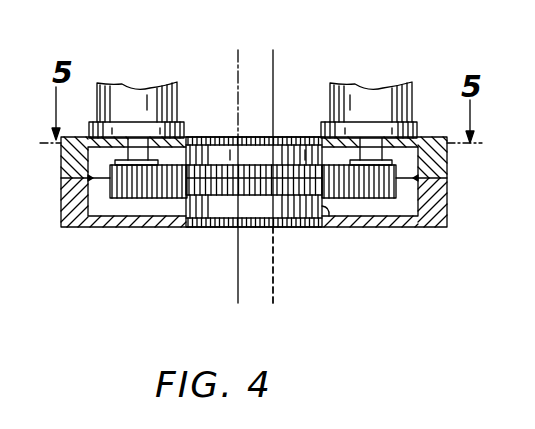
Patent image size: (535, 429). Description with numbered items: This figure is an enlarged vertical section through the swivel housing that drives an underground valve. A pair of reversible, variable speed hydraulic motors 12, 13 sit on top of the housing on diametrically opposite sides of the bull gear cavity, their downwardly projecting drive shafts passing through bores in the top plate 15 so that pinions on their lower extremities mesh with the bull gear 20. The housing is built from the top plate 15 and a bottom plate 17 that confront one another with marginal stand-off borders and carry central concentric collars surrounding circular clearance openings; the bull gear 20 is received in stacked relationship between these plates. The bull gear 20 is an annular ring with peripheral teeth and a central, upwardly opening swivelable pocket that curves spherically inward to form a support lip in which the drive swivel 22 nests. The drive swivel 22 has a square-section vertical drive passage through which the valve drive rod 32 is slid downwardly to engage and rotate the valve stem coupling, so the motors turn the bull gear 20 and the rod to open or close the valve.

The hydraulic motor 12 is at (177, 96).
The hydraulic motor 13 is at (412, 97).
The top plate 15 is at (207, 137).
The bottom plate 17 is at (93, 228).
The bull gear 20 is at (178, 198).
The drive swivel 22 is at (327, 208).
The valve drive rod 32 is at (273, 283).